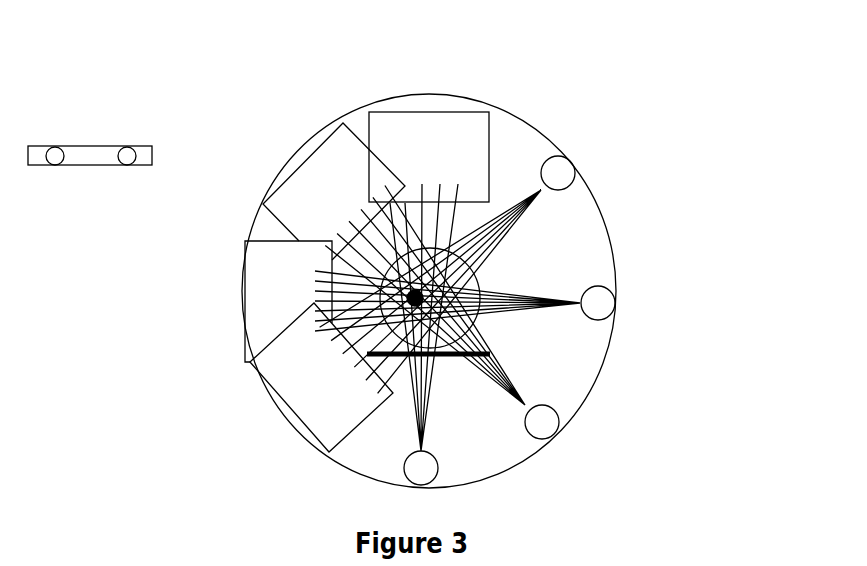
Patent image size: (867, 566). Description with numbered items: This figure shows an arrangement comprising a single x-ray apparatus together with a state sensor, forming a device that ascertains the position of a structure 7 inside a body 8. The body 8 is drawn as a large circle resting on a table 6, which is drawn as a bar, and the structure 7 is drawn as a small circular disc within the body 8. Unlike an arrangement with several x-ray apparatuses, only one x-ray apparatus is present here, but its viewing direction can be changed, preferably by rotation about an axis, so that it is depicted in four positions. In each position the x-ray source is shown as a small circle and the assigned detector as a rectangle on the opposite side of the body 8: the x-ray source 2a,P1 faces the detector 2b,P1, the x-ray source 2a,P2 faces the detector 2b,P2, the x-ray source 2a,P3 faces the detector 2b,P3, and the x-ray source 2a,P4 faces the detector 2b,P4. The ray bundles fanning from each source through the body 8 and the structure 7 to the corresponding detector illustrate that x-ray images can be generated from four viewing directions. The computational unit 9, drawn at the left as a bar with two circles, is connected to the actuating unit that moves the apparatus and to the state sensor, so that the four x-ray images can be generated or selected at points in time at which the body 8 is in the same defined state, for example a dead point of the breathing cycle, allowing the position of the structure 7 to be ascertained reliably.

The x-ray source 2a,P1 is at (567, 170).
The x-ray source 2a,P2 is at (598, 303).
The x-ray source 2a,P3 is at (552, 428).
The x-ray source 2a,P4 is at (423, 476).
The detector 2b,P1 is at (267, 373).
The detector 2b,P2 is at (253, 285).
The detector 2b,P3 is at (277, 204).
The detector 2b,P4 is at (380, 123).
The table 6 is at (490, 352).
The structure 7 is at (473, 283).
The body 8 is at (445, 295).
The computational unit 9 is at (90, 160).